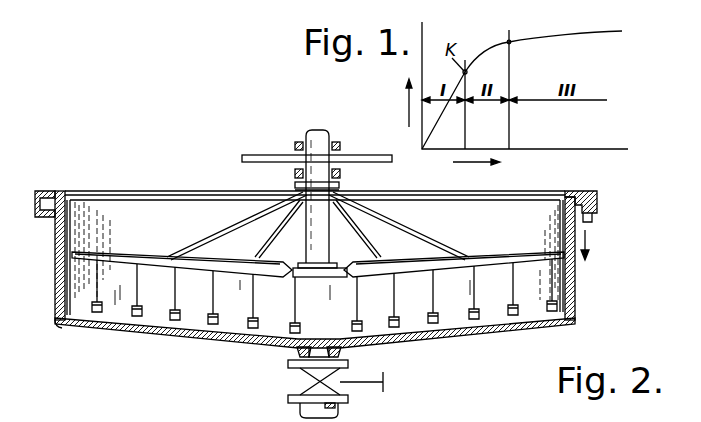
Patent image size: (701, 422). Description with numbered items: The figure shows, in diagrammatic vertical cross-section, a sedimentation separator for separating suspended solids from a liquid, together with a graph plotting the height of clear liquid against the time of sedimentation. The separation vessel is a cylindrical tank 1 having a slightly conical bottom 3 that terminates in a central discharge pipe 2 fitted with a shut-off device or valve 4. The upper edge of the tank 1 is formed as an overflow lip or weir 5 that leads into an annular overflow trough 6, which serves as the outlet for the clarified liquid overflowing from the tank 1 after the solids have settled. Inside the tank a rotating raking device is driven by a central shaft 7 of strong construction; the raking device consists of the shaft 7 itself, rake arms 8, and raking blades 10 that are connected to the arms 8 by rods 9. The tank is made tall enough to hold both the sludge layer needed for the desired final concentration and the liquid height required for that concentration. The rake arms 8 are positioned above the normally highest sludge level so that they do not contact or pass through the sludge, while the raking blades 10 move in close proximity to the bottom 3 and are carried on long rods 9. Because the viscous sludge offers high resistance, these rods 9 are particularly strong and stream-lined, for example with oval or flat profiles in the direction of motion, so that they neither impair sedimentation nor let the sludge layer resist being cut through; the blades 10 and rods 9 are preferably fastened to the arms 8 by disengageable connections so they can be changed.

The cylindrical tank 1 is at (153, 208).
The central discharge pipe 2 is at (341, 353).
The slightly conical bottom 3 is at (181, 338).
The shut-off device or valve 4 is at (306, 371).
The overflow lip or weir 5 is at (60, 196).
The annular overflow trough 6 is at (46, 199).
The central shaft 7 is at (312, 238).
The rake arms 8 is at (80, 254).
The rods 9 is at (95, 283).
The raking blades 10 is at (137, 323).